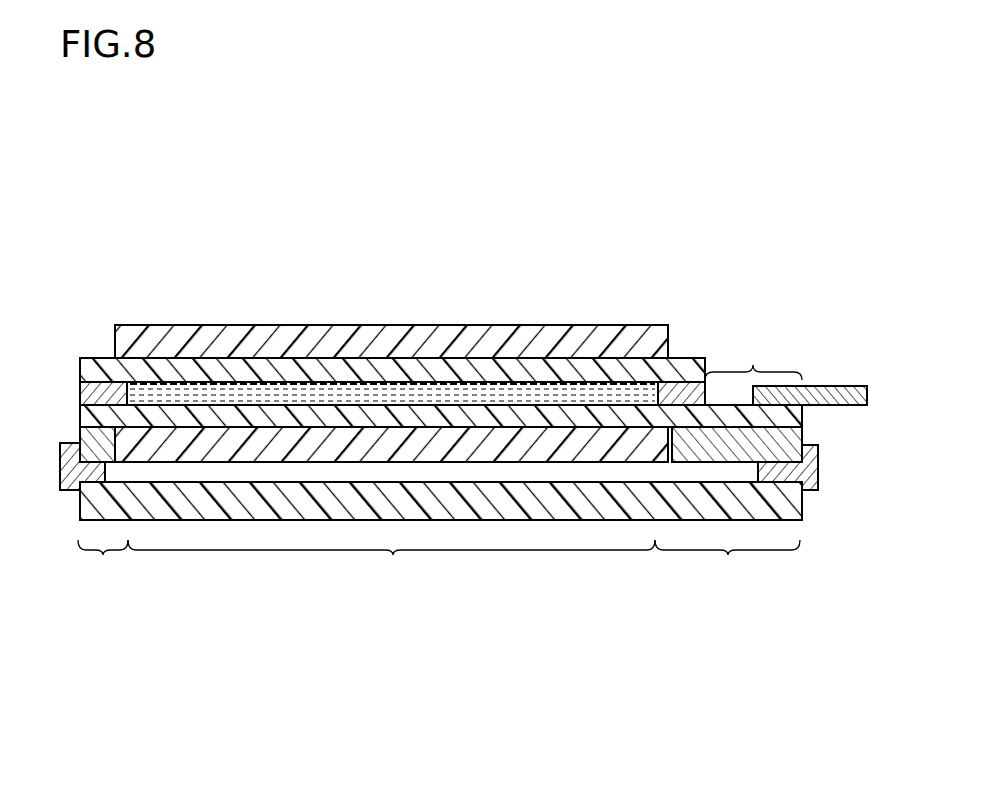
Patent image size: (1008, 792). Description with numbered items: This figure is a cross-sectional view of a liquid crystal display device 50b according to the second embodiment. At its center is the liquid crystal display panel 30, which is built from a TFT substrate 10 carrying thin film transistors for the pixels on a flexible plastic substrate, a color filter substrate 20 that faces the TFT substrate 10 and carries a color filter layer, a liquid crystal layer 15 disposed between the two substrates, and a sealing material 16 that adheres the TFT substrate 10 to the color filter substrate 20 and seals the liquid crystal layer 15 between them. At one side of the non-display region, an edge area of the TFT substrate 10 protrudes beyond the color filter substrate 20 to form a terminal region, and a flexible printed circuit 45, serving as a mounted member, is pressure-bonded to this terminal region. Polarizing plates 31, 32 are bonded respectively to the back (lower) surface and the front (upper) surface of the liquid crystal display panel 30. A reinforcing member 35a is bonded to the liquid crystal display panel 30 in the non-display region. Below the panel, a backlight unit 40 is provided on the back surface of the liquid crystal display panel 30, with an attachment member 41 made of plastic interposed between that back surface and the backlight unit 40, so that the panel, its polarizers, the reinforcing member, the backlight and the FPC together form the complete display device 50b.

The liquid crystal display device 50b is at (173, 203).
The polarizing plate 32 is at (376, 346).
The polarizing plate 31 is at (280, 445).
The liquid crystal display panel 30 is at (441, 352).
The color filter substrate 20 is at (588, 370).
The liquid crystal layer 15 is at (467, 395).
The sealing material 16 is at (688, 392).
The TFT substrate 10 is at (778, 416).
The reinforcing member 35a is at (782, 434).
The flexible printed circuit 45 is at (838, 390).
The attachment member 41 is at (798, 473).
The backlight unit 40 is at (790, 502).